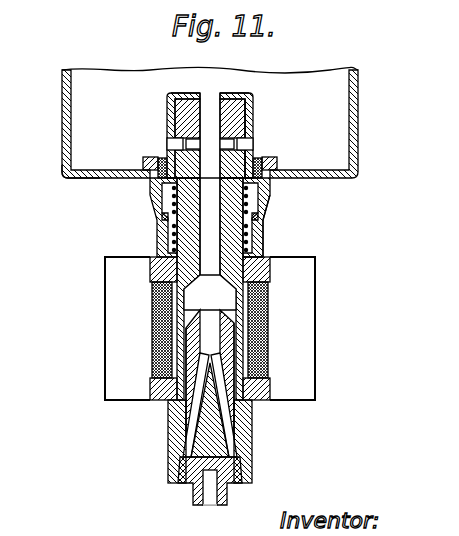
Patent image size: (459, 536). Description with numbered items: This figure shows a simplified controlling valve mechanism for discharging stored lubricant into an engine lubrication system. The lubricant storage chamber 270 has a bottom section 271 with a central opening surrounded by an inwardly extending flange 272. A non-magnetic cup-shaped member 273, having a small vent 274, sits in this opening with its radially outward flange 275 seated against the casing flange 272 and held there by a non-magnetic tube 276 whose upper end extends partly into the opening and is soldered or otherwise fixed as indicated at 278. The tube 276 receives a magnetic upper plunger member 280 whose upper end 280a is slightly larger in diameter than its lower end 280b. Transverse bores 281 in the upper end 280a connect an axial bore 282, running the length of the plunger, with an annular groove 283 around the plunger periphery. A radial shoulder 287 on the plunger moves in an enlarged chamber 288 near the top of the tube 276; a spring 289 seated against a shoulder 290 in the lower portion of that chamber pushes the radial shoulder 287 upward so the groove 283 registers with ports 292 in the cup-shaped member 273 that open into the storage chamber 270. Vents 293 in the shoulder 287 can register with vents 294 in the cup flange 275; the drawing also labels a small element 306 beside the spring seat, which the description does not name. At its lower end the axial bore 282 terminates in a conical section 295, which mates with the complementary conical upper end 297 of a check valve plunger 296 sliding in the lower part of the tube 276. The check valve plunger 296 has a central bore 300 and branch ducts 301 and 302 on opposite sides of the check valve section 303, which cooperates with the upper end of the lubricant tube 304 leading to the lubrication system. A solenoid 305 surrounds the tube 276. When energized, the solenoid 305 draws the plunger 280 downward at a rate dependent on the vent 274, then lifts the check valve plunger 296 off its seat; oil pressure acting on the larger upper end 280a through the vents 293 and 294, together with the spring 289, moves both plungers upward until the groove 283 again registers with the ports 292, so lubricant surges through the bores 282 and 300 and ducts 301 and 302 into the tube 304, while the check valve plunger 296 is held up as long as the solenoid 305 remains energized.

The lubricant storage chamber 270 is at (62, 136).
The bottom section 271 is at (84, 180).
The flange 272 is at (160, 161).
The cup-shaped member 273 is at (188, 93).
The vent 274 is at (212, 96).
The flange 275 is at (144, 163).
The tube 276 is at (157, 243).
The soldered joint 278 is at (150, 183).
The upper plunger member 280 is at (174, 268).
The upper end of plunger 280a is at (176, 105).
The lower end of plunger 280b is at (262, 230).
The transverse bores 281 is at (251, 112).
The axial bore 282 is at (205, 108).
The annular groove 283 is at (176, 120).
The radial shoulder 287 is at (263, 215).
The enlarged chamber 288 is at (264, 219).
The spring 289 is at (160, 207).
The shoulder 290 is at (258, 240).
The ports 292 is at (186, 143).
The vents 293 is at (170, 197).
The vents 294 is at (168, 150).
The conical section 295 is at (172, 296).
The check valve plunger 296 is at (170, 420).
The conical upper end 297 is at (186, 318).
The central bore 300 is at (252, 323).
The branch duct 301 is at (189, 440).
The branch duct 302 is at (230, 430).
The check valve section 303 is at (191, 483).
The lubricant tube 304 is at (230, 503).
The solenoid 305 is at (316, 302).
The spring seat 306 is at (165, 220).